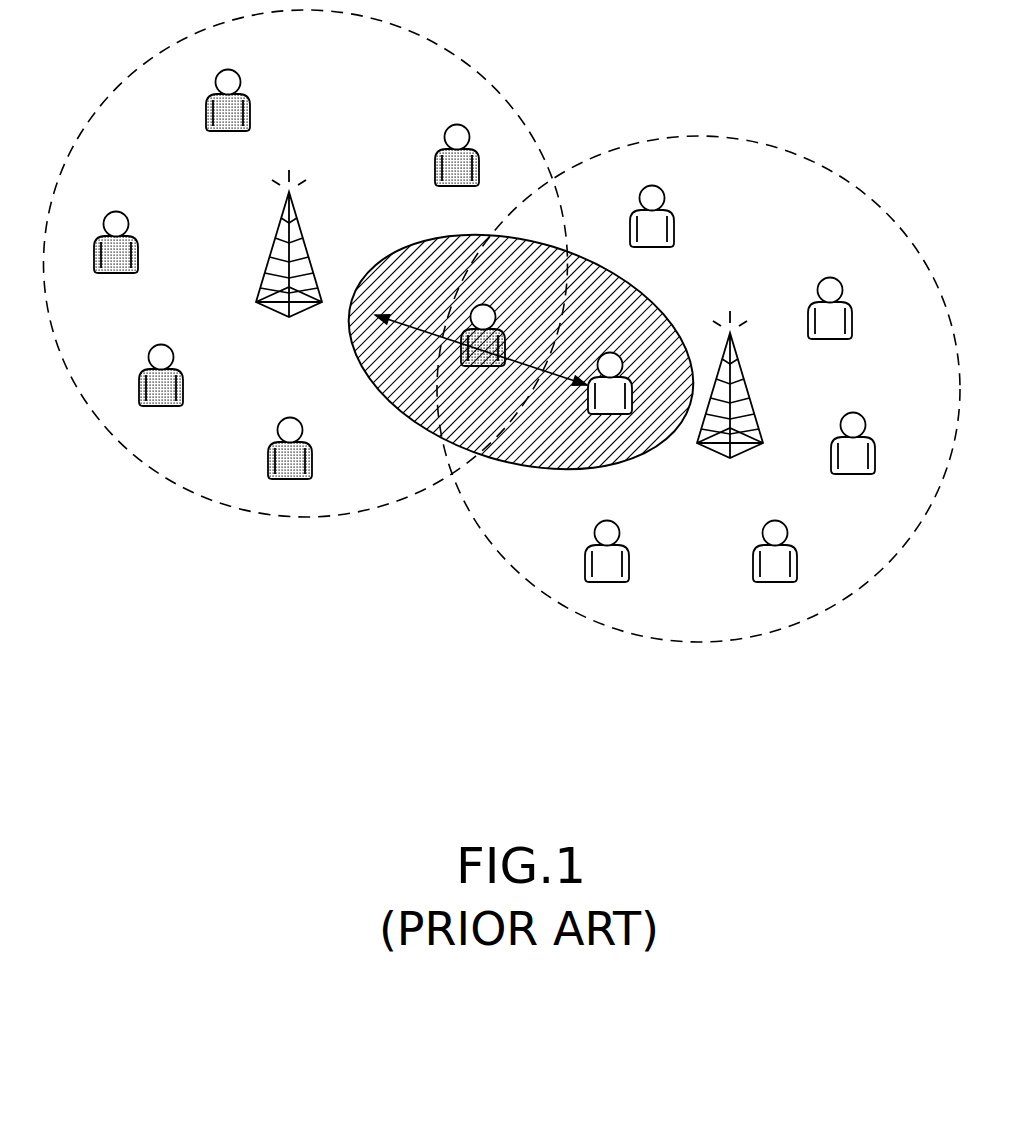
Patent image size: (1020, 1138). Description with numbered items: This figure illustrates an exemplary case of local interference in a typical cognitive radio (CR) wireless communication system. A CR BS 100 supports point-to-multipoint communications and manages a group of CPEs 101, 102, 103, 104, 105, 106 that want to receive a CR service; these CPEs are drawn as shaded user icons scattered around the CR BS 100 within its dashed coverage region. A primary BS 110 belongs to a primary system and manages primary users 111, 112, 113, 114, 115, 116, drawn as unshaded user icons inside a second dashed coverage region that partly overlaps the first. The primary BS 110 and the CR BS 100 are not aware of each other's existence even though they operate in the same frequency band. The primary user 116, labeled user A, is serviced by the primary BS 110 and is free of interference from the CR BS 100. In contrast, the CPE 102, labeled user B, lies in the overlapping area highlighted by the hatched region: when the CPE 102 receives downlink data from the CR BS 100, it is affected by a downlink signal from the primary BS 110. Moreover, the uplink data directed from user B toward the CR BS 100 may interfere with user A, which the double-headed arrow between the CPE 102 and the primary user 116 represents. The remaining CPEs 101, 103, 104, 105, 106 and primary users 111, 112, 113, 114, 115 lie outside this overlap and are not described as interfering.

The CR BS 100 is at (323, 250).
The primary BS 110 is at (765, 395).
The CPE 101 is at (434, 162).
The CPE 102 is at (483, 366).
The CPE 103 is at (312, 452).
The CPE 104 is at (183, 380).
The CPE 105 is at (138, 248).
The CPE 106 is at (250, 104).
The primary user 111 is at (674, 222).
The primary user 112 is at (852, 313).
The primary user 113 is at (875, 448).
The primary user 114 is at (797, 558).
The primary user 115 is at (629, 558).
The primary user 116 is at (610, 352).